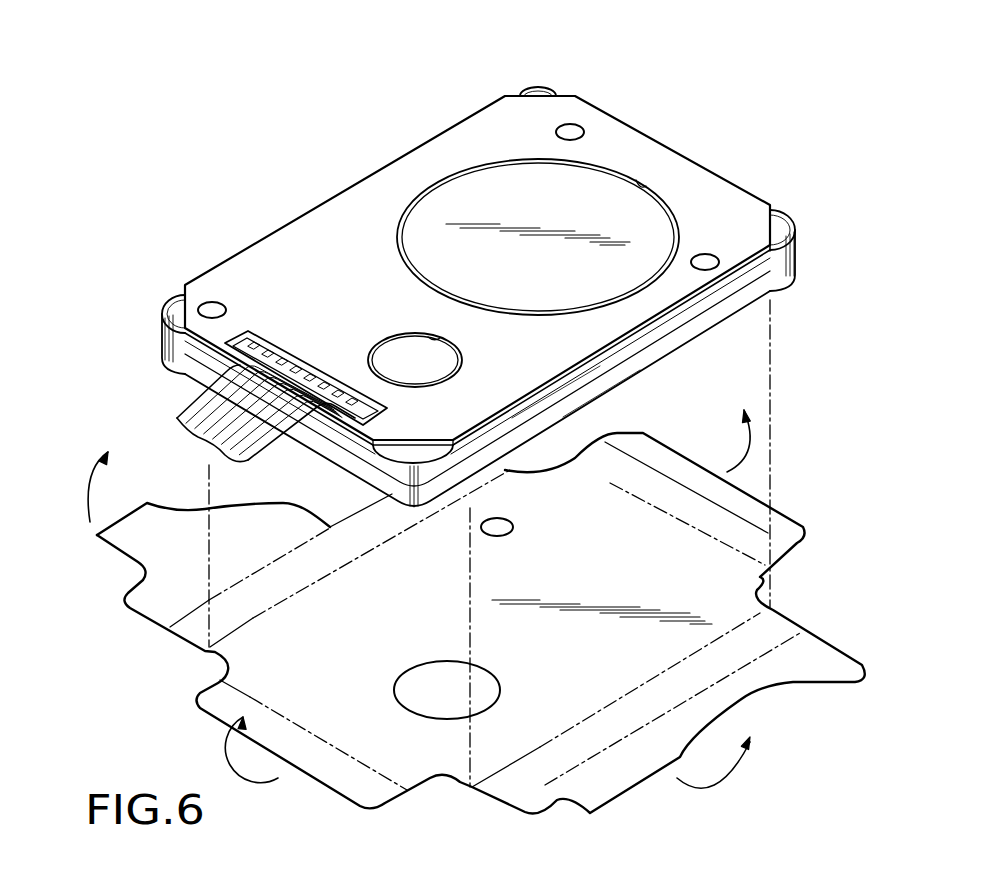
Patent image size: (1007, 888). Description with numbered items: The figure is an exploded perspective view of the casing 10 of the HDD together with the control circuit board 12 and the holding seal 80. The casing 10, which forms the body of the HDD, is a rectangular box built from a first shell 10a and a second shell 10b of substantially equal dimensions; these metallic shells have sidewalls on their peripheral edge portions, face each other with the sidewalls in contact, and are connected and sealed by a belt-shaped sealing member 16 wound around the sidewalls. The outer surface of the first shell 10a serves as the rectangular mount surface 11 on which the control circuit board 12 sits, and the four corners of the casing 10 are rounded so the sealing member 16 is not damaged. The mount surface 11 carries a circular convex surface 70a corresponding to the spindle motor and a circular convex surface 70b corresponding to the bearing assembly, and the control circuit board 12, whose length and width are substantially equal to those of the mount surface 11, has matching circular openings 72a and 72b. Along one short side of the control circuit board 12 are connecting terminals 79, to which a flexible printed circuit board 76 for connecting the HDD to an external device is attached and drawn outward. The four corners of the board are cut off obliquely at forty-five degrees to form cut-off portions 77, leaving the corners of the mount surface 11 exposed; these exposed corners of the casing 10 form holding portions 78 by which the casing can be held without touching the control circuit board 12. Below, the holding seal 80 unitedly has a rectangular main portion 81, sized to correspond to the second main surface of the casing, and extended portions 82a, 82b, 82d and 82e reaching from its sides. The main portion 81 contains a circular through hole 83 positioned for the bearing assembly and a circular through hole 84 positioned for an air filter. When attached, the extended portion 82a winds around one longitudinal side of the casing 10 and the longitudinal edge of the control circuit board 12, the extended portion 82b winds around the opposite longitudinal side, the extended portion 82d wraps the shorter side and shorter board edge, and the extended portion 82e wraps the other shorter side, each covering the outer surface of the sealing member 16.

The casing 10 is at (750, 323).
The first shell 10a is at (512, 418).
The second shell 10b is at (564, 417).
The mount surface 11 is at (650, 332).
The control circuit board 12 is at (332, 212).
The sealing member 16 is at (715, 313).
The circular convex surface 70a is at (475, 190).
The circular convex surface 70b is at (398, 345).
The circular opening 72a is at (645, 182).
The circular opening 72b is at (432, 338).
The flexible printed circuit board 76 is at (203, 437).
The cut-off portion 77 is at (548, 93).
The holding portion 78 is at (522, 88).
The connecting terminal 79 is at (320, 365).
The holding seal 80 is at (438, 793).
The main portion 81 is at (703, 603).
The extended portion 82a is at (787, 670).
The extended portion 82b is at (130, 540).
The extended portion 82d is at (785, 520).
The extended portion 82e is at (342, 775).
The circular through hole 83 is at (405, 705).
The circular through hole 84 is at (497, 537).